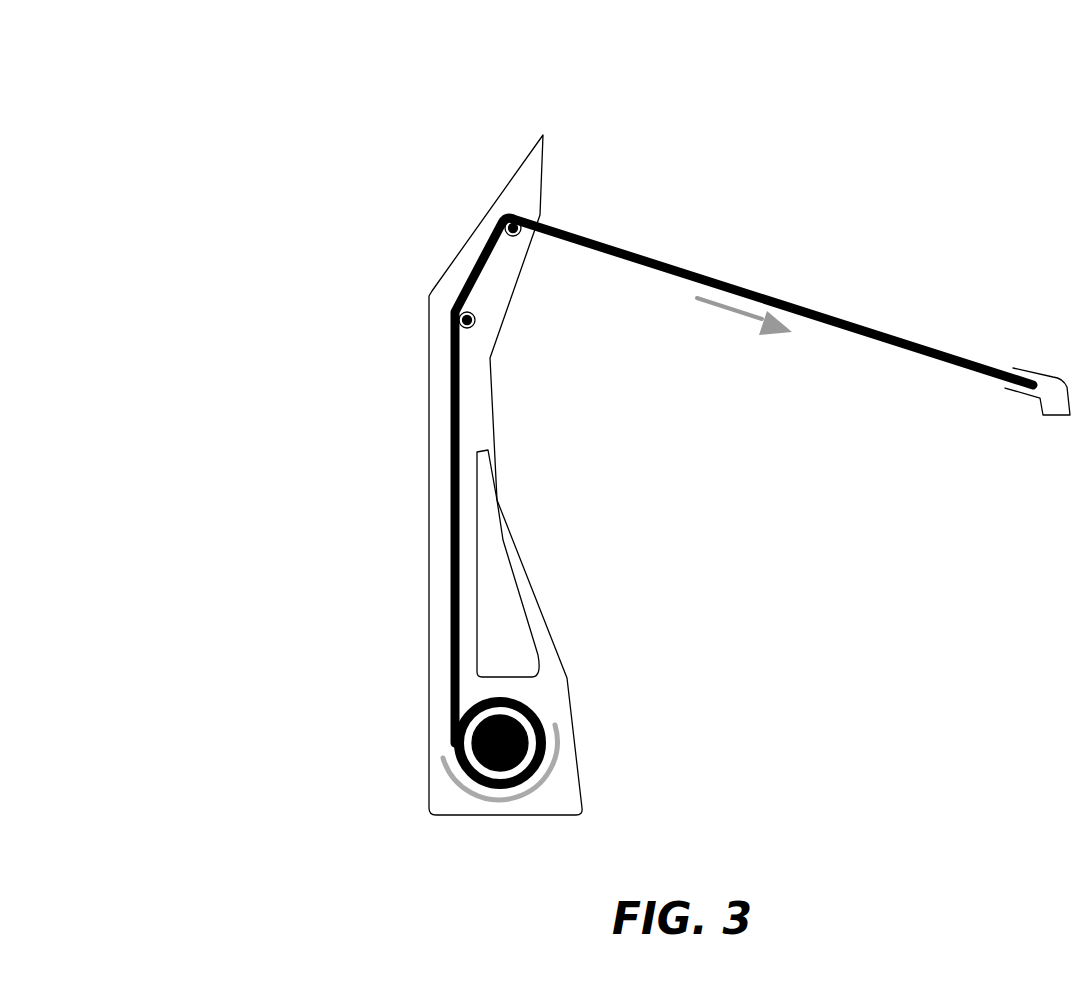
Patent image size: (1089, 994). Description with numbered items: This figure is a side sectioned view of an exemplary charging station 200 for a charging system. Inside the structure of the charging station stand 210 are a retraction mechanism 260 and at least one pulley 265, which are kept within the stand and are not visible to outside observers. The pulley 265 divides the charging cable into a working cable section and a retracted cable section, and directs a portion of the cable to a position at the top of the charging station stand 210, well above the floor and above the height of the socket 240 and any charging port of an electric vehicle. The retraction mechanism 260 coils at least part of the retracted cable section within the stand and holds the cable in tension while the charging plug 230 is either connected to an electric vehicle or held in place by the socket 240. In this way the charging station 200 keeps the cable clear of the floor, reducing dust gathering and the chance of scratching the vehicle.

The charging station 200 is at (106, 63).
The charging station stand 210 is at (452, 267).
The charging plug 230 is at (1043, 410).
The socket 240 is at (495, 503).
The retraction mechanism 260 is at (470, 753).
The pulley 265 is at (515, 236).